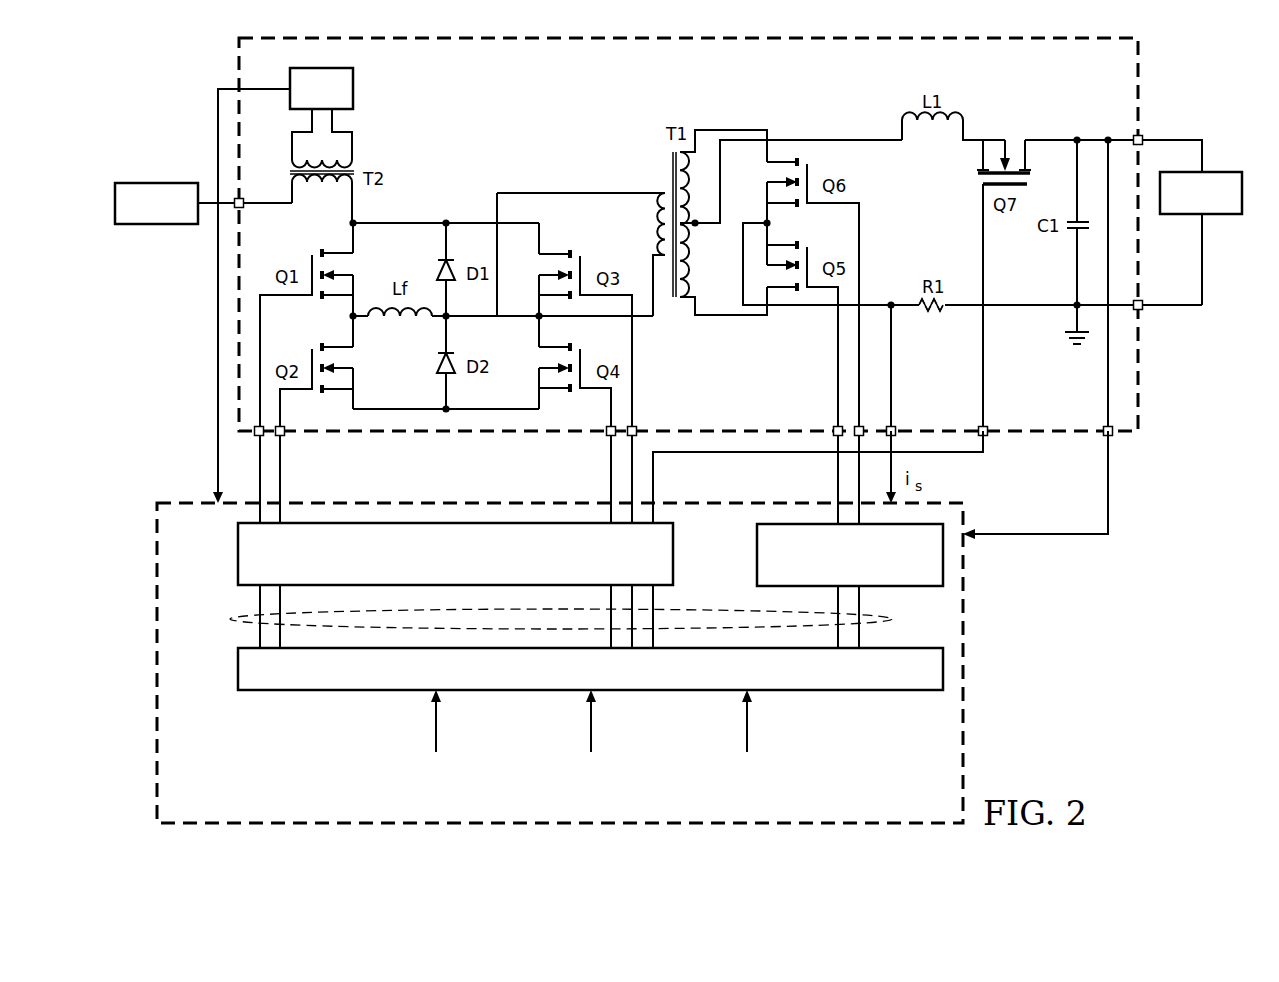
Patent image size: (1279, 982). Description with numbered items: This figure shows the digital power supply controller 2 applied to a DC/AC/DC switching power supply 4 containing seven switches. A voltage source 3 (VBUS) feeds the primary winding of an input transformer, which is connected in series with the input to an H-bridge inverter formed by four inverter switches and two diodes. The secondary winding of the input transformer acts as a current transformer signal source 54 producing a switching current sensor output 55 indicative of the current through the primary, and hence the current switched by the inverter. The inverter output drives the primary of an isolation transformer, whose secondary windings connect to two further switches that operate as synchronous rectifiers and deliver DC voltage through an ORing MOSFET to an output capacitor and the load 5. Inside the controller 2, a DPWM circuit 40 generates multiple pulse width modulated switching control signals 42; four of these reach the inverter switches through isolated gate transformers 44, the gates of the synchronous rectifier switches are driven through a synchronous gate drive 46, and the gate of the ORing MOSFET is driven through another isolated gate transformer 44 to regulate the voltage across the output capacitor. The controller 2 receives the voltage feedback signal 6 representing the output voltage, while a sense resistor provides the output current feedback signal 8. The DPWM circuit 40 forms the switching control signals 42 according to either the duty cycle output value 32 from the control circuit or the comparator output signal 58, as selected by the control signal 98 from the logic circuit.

The digital power supply controller apparatus 2 is at (146, 703).
The voltage source 3 is at (156, 182).
The switching power supply 4 is at (536, 113).
The load 5 is at (1220, 172).
The voltage feedback signal 6 is at (1108, 480).
The output current feedback signal 8 is at (972, 452).
The duty cycle output value 32 is at (591, 722).
The DPWM circuit 40 is at (672, 690).
The pulse width modulated switching control signals 42 is at (230, 617).
The isolated gate transformers 44 is at (238, 557).
The synchronous gate drive 46 is at (757, 556).
The current transformer signal source 54 is at (353, 79).
The switching current sensor output 55 is at (218, 330).
The comparator output signal 58 is at (747, 722).
The control signal 98 is at (436, 722).